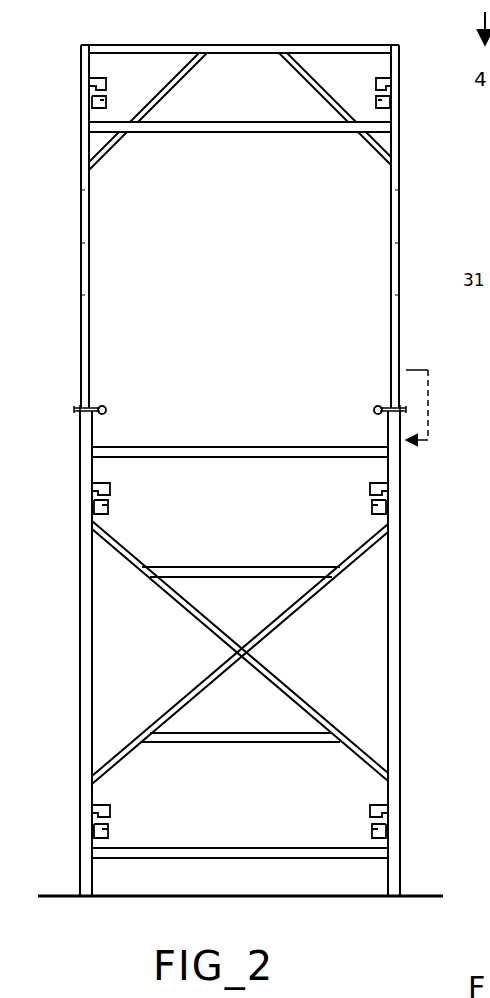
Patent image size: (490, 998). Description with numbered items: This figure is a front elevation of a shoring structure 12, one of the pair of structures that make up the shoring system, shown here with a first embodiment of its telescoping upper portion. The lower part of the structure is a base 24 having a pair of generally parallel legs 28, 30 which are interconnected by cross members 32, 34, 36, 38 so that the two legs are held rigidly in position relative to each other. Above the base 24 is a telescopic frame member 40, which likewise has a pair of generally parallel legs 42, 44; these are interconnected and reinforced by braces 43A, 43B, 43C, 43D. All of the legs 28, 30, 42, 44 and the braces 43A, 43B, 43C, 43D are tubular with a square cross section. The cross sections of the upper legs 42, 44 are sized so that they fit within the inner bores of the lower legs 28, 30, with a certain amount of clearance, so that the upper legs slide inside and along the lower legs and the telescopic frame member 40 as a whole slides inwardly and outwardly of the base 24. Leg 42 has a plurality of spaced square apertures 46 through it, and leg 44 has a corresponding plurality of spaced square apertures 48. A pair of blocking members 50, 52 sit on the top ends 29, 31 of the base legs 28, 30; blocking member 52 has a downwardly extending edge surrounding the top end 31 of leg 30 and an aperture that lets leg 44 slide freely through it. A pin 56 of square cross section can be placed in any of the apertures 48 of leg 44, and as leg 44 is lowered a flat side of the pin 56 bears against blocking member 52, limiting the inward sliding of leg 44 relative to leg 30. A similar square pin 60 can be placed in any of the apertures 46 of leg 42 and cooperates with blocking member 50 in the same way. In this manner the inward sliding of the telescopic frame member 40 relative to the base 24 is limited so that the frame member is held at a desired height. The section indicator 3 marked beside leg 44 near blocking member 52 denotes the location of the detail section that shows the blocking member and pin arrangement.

The shoring structure 12 is at (402, 710).
The base 24 is at (402, 776).
The leg 28 is at (92, 703).
The top end 29 is at (92, 435).
The leg 30 is at (401, 645).
The top end 31 is at (388, 436).
The cross member 32 is at (224, 458).
The cross member 34 is at (123, 557).
The cross member 36 is at (290, 618).
The cross member 38 is at (292, 850).
The telescopic frame member 40 is at (92, 267).
The leg 42 is at (90, 212).
The leg 44 is at (390, 211).
The apertures 46 is at (89, 298).
The apertures 48 is at (391, 356).
The brace 43A is at (272, 45).
The brace 43B is at (278, 134).
The brace 43C is at (152, 112).
The brace 43D is at (322, 95).
The blocking member 50 is at (78, 410).
The blocking member 52 is at (402, 416).
The pin 56 is at (404, 408).
The pin 60 is at (103, 406).
The section line 3- 3 is at (417, 409).